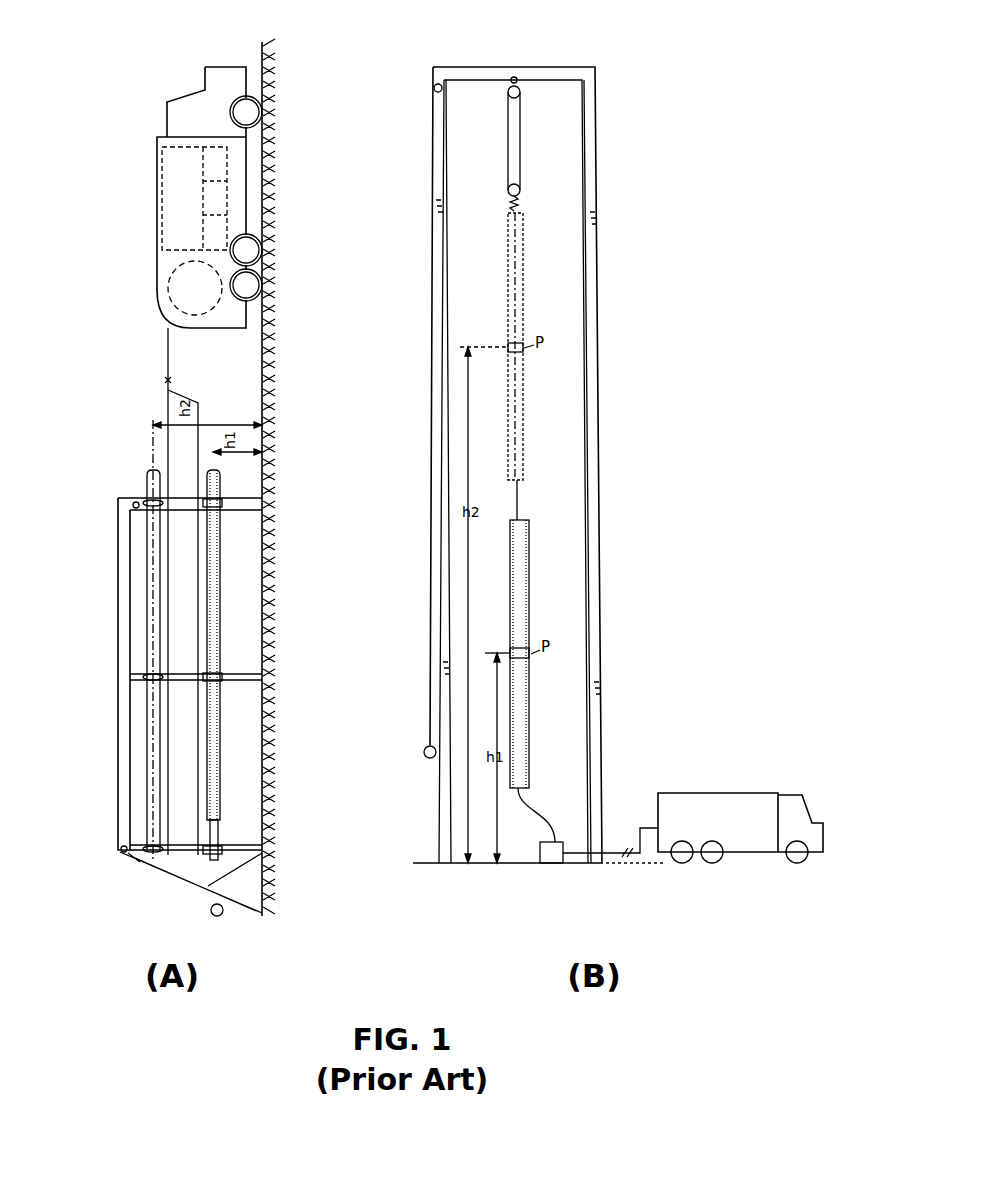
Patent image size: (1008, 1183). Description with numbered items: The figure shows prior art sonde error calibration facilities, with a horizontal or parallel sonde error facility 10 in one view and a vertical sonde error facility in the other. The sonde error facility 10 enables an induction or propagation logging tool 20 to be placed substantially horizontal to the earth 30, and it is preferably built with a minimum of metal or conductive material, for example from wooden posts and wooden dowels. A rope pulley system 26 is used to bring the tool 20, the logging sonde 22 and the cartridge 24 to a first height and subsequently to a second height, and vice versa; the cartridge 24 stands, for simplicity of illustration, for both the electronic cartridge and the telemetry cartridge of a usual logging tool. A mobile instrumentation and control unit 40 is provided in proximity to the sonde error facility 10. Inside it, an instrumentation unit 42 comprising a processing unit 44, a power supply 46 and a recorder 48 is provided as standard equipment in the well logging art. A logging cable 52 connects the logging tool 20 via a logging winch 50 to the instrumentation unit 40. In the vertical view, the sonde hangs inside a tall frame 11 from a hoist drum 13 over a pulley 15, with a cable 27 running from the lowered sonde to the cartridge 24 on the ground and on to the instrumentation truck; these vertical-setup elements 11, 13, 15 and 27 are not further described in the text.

In FIG. 1A, the sonde error facility 10 is at (177, 680).
In FIG. 1B, the tower 11 is at (597, 130).
In FIG. 1B, the winch drum 13 is at (522, 150).
In FIG. 1B, the pulley 15 is at (427, 86).
In FIG. 1A, the induction or propagation logging tool 20 is at (205, 707).
In FIG. 1A, the logging sonde 22 is at (206, 627).
In FIG. 1B, the logging sonde 22 is at (524, 276).
In FIG. 1A, the cartridge 24 is at (205, 832).
In FIG. 1B, the cartridge 24 is at (540, 851).
In FIG. 1A, the rope pulley system 26 is at (120, 857).
In FIG. 1B, the cable 27 is at (535, 822).
In FIG. 1A, the earth 30 is at (262, 606).
In FIG. 1A, the mobile instrumentation and control unit 40 is at (134, 207).
In FIG. 1A, the instrumentation unit 42 is at (162, 170).
In FIG. 1A, the processing unit 44 is at (220, 190).
In FIG. 1A, the power supply 46 is at (220, 227).
In FIG. 1A, the recorder 48 is at (220, 155).
In FIG. 1A, the logging winch 50 is at (170, 288).
In FIG. 1A, the logging cable 52 is at (168, 356).